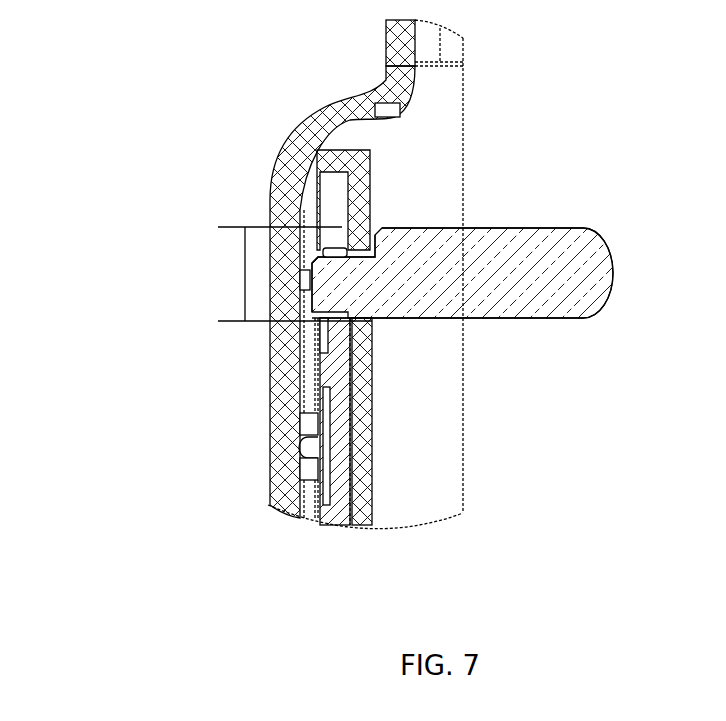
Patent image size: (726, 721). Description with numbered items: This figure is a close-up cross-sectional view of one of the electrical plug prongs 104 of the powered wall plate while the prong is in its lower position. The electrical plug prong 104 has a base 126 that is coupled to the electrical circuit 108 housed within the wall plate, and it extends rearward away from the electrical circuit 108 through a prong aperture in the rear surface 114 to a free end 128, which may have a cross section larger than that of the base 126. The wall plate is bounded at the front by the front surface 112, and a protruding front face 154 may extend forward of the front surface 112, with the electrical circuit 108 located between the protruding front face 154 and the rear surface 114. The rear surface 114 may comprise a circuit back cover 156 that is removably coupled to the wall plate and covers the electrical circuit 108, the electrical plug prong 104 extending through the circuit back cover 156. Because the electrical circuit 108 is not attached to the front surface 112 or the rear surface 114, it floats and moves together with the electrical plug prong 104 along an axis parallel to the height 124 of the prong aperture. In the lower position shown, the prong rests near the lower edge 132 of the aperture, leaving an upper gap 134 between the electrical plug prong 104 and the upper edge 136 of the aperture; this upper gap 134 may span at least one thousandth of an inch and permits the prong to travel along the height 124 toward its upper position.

The electrical plug prong 104 is at (480, 252).
The electrical circuit 108 is at (342, 499).
The front surface 112 is at (387, 32).
The rear surface 114 is at (370, 167).
The height 124 is at (245, 266).
The base 126 is at (337, 285).
The free end 128 is at (582, 275).
The lower edge 132 is at (355, 322).
The upper gap 134 is at (358, 238).
The upper edge 136 is at (356, 226).
The protruding front face 154 is at (268, 468).
The circuit back cover 156 is at (358, 434).